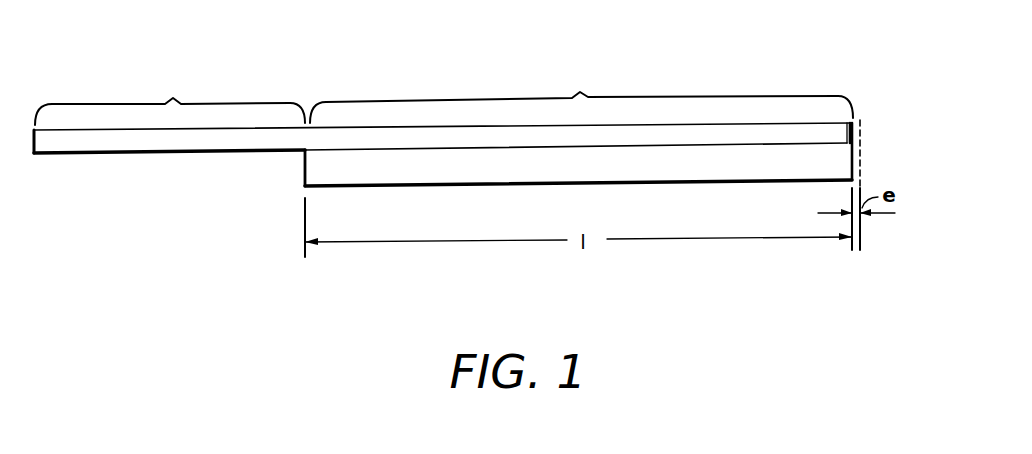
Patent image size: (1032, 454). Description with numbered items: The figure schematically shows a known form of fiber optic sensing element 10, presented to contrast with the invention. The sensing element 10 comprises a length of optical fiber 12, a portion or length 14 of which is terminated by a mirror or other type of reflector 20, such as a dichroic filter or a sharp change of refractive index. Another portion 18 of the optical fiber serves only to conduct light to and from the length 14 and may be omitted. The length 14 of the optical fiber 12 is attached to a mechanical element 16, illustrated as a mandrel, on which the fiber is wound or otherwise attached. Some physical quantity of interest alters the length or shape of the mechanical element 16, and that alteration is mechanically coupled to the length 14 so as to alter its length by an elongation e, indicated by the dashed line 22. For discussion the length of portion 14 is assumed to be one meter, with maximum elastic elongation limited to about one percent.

The fiber optic sensing element 10 is at (866, 82).
The optical fiber 12 is at (193, 157).
The portion of optical fiber 14 is at (581, 90).
The mechanical element 16 is at (410, 188).
The portion of optical fiber 18 is at (170, 94).
The reflector 20 is at (860, 130).
The dashed line 22 is at (860, 162).